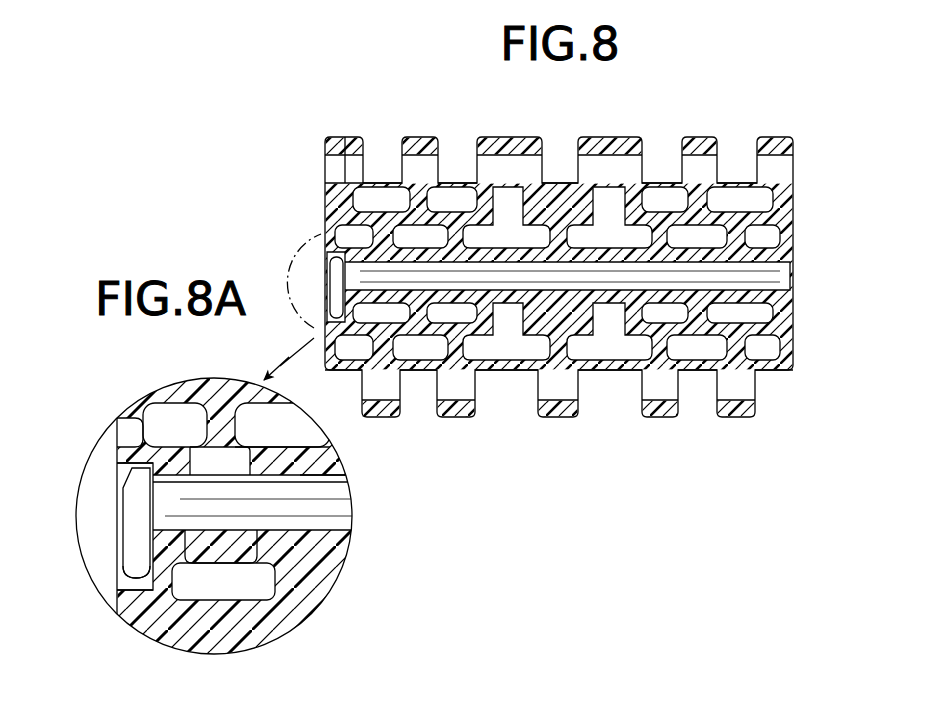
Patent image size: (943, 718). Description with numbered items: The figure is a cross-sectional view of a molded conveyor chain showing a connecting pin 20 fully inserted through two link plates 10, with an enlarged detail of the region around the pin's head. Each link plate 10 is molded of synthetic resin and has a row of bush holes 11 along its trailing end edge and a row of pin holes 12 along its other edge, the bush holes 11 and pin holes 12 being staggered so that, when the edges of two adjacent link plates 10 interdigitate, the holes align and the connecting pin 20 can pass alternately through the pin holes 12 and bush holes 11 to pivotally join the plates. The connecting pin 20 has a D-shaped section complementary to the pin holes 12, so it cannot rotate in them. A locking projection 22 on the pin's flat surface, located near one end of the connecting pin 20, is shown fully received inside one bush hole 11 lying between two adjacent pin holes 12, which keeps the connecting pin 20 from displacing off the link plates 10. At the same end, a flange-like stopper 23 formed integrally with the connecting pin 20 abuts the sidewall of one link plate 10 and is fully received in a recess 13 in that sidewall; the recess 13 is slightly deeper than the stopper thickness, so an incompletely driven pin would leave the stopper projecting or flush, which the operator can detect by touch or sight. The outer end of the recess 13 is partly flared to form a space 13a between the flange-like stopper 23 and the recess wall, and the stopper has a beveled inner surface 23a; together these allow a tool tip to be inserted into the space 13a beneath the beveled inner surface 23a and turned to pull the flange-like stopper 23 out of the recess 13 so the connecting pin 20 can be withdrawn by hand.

In FIG. 8, the link plate 10 is at (810, 215).
In FIG. 8, the bush hole 11 is at (366, 385).
In FIG. 8A, the bush hole 11 is at (232, 522).
In FIG. 8, the pin hole 12 is at (360, 172).
In FIG. 8A, the pin hole 12 is at (332, 488).
In FIG. 8A, the recess 13 is at (118, 478).
In FIG. 8A, the space 13a is at (128, 590).
In FIG. 8, the connecting pin 20 is at (316, 262).
In FIG. 8A, the connecting pin 20 is at (354, 518).
In FIG. 8A, the locking projection 22 is at (217, 482).
In FIG. 8A, the flange-like stopper 23 is at (133, 525).
In FIG. 8A, the beveled inner surface 23a is at (128, 574).